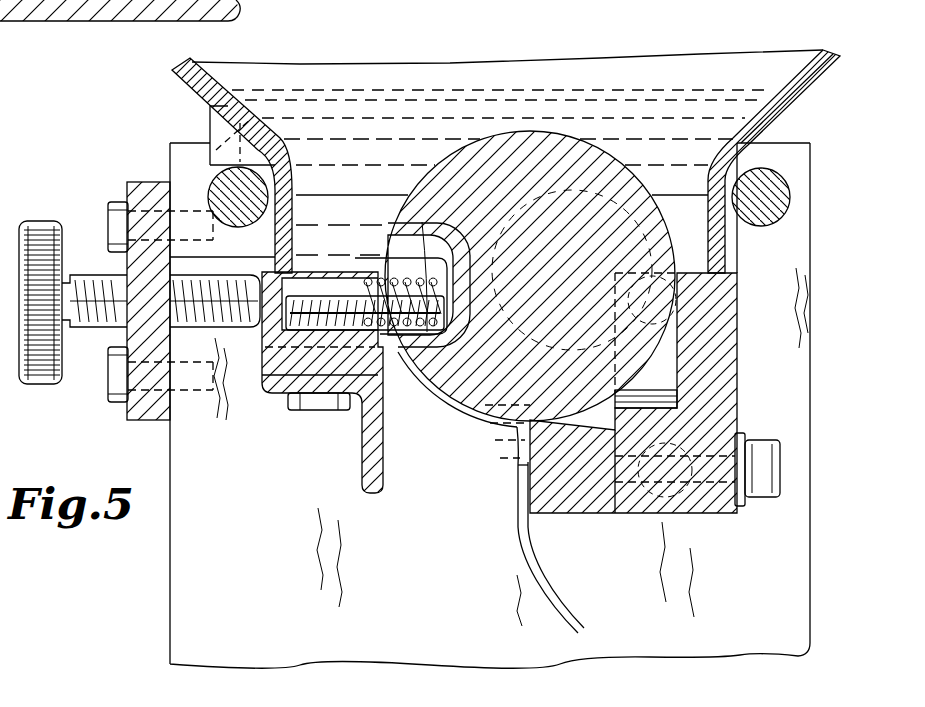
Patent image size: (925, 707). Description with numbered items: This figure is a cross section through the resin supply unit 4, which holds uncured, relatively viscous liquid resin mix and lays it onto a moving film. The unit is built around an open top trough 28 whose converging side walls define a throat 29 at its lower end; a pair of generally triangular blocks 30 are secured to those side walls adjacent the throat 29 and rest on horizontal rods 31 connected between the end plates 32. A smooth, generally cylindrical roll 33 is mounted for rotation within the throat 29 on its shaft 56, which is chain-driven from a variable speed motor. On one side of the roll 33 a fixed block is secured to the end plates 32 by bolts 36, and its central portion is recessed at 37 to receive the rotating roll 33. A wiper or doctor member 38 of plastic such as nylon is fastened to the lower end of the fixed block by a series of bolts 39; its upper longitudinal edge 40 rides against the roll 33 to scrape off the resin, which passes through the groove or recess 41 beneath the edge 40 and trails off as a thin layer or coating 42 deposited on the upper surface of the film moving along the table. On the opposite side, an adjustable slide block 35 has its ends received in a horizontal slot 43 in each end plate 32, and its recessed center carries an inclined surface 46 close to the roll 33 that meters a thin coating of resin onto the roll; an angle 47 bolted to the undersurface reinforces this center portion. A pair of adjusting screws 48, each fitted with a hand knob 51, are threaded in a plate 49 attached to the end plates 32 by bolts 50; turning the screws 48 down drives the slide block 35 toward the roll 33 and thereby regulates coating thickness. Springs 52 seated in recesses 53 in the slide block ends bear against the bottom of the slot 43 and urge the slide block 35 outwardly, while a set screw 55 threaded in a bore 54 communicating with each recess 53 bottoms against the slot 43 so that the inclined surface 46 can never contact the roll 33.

The resin supply unit 4 is at (726, 50).
The open top trough 28 is at (820, 70).
The throat 29 is at (702, 260).
The triangular blocks 30 is at (225, 122).
The horizontal rods 31 is at (213, 180).
The end plates 32 is at (812, 268).
The roll 33 is at (562, 133).
The adjustable slide block 35 is at (275, 390).
The bolts 36 is at (722, 312).
The recess 37 is at (672, 370).
The wiper or doctor member 38 is at (563, 513).
The bolts 39 is at (785, 470).
The upper longitudinal edge 40 is at (560, 412).
The groove or recess 41 is at (572, 414).
The layer or coating 42 is at (521, 554).
The horizontal slot 43 is at (218, 258).
The inclined surface 46 is at (388, 262).
The angle 47 is at (362, 450).
The adjusting screws 48 is at (118, 276).
The plate 49 is at (140, 182).
The bolts 50 is at (118, 202).
The hand knob 51 is at (52, 224).
The springs 52 is at (420, 272).
The recesses 53 is at (385, 387).
The threaded bore 54 is at (327, 264).
The set screw 55 is at (366, 268).
The shaft 56 is at (600, 199).